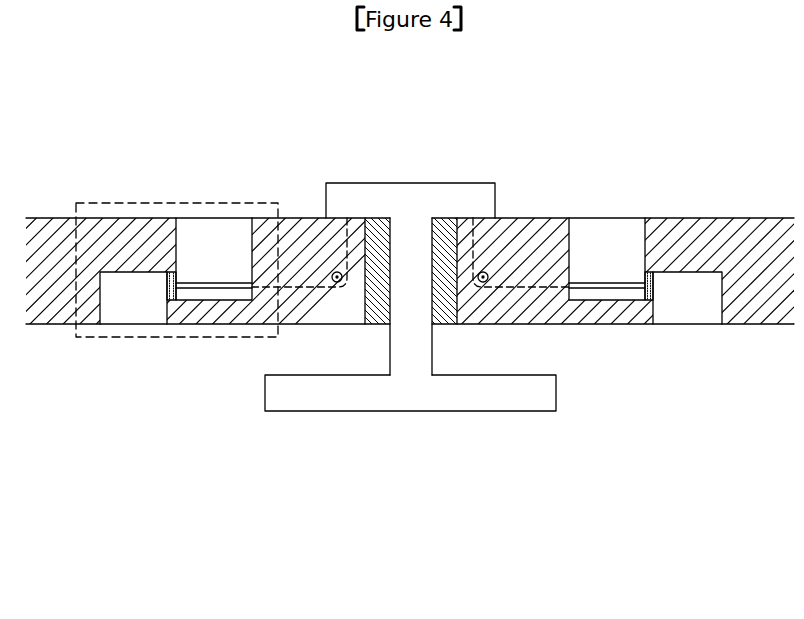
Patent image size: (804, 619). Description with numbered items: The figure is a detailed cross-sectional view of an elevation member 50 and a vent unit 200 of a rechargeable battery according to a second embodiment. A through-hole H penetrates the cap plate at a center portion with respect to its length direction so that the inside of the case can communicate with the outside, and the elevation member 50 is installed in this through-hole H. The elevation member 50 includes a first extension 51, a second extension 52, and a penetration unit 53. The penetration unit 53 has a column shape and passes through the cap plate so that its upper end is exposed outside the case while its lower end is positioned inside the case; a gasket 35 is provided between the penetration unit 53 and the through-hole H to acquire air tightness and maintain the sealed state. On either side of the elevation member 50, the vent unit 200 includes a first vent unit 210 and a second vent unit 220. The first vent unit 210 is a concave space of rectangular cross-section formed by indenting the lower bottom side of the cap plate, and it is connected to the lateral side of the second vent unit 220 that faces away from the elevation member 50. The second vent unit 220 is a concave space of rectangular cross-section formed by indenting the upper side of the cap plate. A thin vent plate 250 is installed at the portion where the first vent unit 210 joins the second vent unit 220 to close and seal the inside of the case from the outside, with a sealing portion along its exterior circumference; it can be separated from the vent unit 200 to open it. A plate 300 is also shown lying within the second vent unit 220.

The elevation member 50 is at (415, 140).
The first extension 51 is at (465, 192).
The second extension 52 is at (412, 407).
The penetration unit 53 is at (428, 347).
The gasket 35 is at (457, 290).
The through-hole H is at (376, 320).
The vent unit 200 is at (110, 418).
The first vent unit 210 is at (117, 307).
The second vent unit 220 is at (213, 229).
The vent plate 250 is at (168, 272).
The plate 300 is at (213, 289).